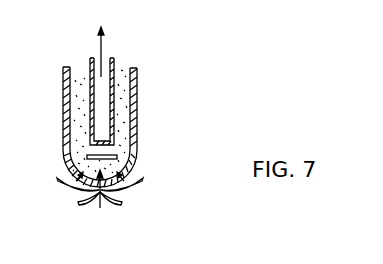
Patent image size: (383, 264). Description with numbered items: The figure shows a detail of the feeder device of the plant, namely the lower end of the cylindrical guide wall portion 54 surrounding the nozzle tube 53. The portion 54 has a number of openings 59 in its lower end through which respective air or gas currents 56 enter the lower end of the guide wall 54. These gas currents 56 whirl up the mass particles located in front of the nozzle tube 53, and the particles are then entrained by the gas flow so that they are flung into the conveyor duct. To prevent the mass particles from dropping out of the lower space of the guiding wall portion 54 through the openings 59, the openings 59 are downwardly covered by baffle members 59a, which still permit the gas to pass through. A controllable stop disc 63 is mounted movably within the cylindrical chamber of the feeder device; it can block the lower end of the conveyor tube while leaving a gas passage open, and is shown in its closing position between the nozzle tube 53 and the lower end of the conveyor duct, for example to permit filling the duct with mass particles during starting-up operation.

The nozzle tube 53 is at (114, 66).
The cylindrical guide wall portion 54 is at (63, 78).
The air or gas currents 56 is at (98, 52).
The openings 59 is at (122, 187).
The baffle members 59a is at (113, 206).
The controllable stop disc 63 is at (88, 156).